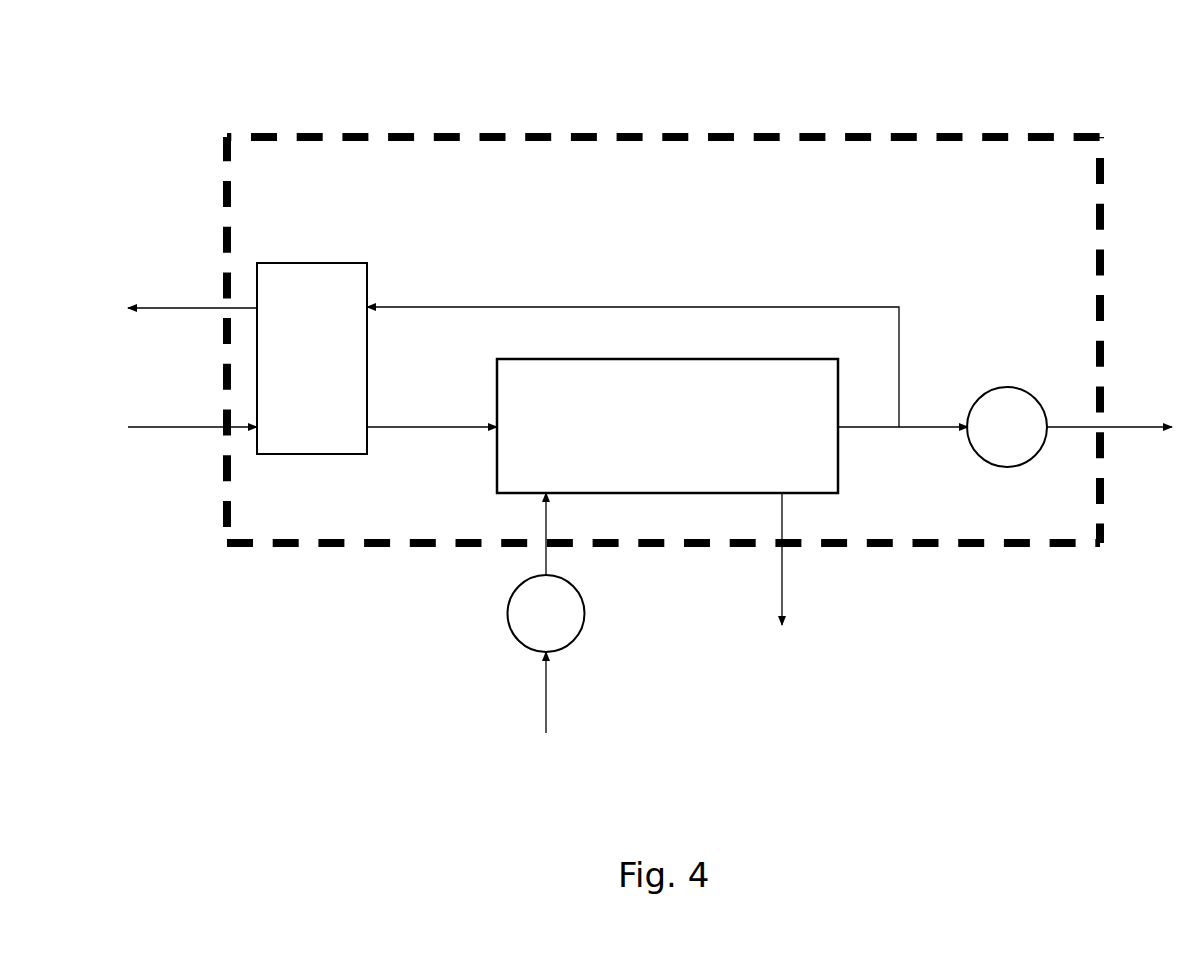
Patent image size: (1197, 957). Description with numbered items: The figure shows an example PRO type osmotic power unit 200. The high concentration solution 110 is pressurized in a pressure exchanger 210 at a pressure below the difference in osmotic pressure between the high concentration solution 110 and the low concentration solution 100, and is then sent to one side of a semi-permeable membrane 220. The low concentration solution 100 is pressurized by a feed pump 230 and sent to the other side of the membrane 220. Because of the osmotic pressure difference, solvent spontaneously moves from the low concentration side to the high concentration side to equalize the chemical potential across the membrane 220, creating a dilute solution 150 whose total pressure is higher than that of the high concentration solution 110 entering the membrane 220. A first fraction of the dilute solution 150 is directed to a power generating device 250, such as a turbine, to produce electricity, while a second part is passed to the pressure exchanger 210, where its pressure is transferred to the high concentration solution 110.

The osmotic power unit 200 is at (328, 167).
The pressure exchanger 210 is at (312, 358).
The semi-permeable membrane 220 is at (633, 466).
The feed pump 230 is at (546, 572).
The power generating device 250 is at (1069, 427).
The high concentration solution 110 is at (192, 444).
The dilute solution 150 is at (903, 447).
The low concentration solution 100 is at (543, 705).